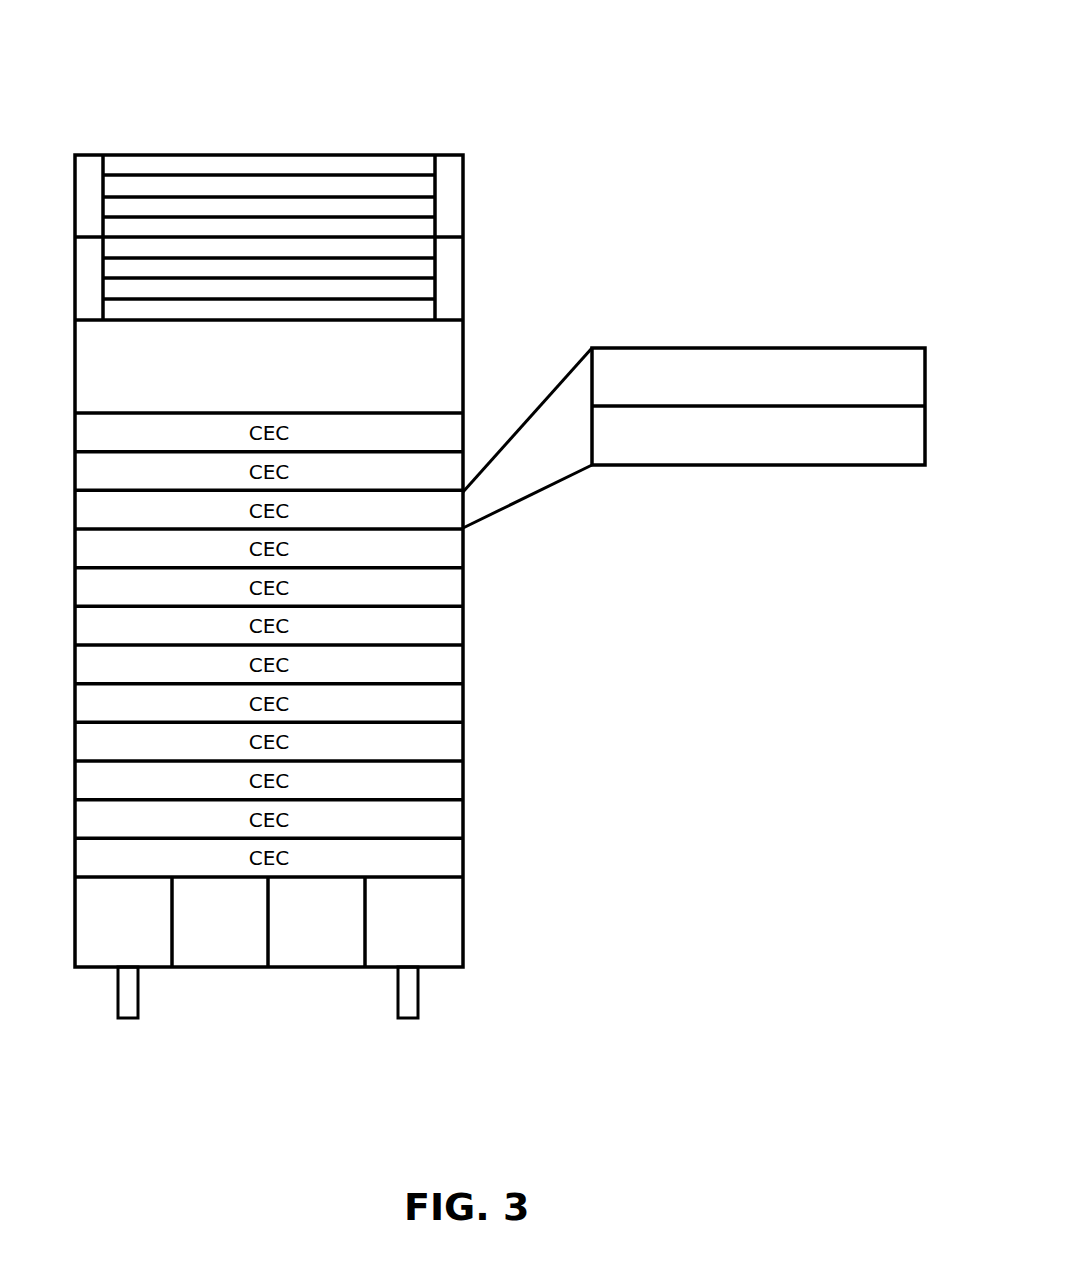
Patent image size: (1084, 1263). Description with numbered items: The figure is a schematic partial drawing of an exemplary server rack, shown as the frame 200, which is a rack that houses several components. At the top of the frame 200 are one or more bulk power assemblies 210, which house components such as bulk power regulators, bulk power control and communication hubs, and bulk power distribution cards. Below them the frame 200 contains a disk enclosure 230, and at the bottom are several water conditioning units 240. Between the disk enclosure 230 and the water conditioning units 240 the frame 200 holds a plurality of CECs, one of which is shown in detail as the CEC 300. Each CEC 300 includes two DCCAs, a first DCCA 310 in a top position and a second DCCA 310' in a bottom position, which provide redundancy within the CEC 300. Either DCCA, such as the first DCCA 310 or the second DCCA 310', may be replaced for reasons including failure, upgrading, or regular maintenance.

The frame 200 is at (384, 103).
The bulk power assembly 210 is at (463, 192).
The disk enclosure 230 is at (463, 345).
The water conditioning unit 240 is at (452, 902).
The CEC 300 is at (732, 348).
The first DCCA 310 is at (758, 334).
The second DCCA 310' is at (809, 491).